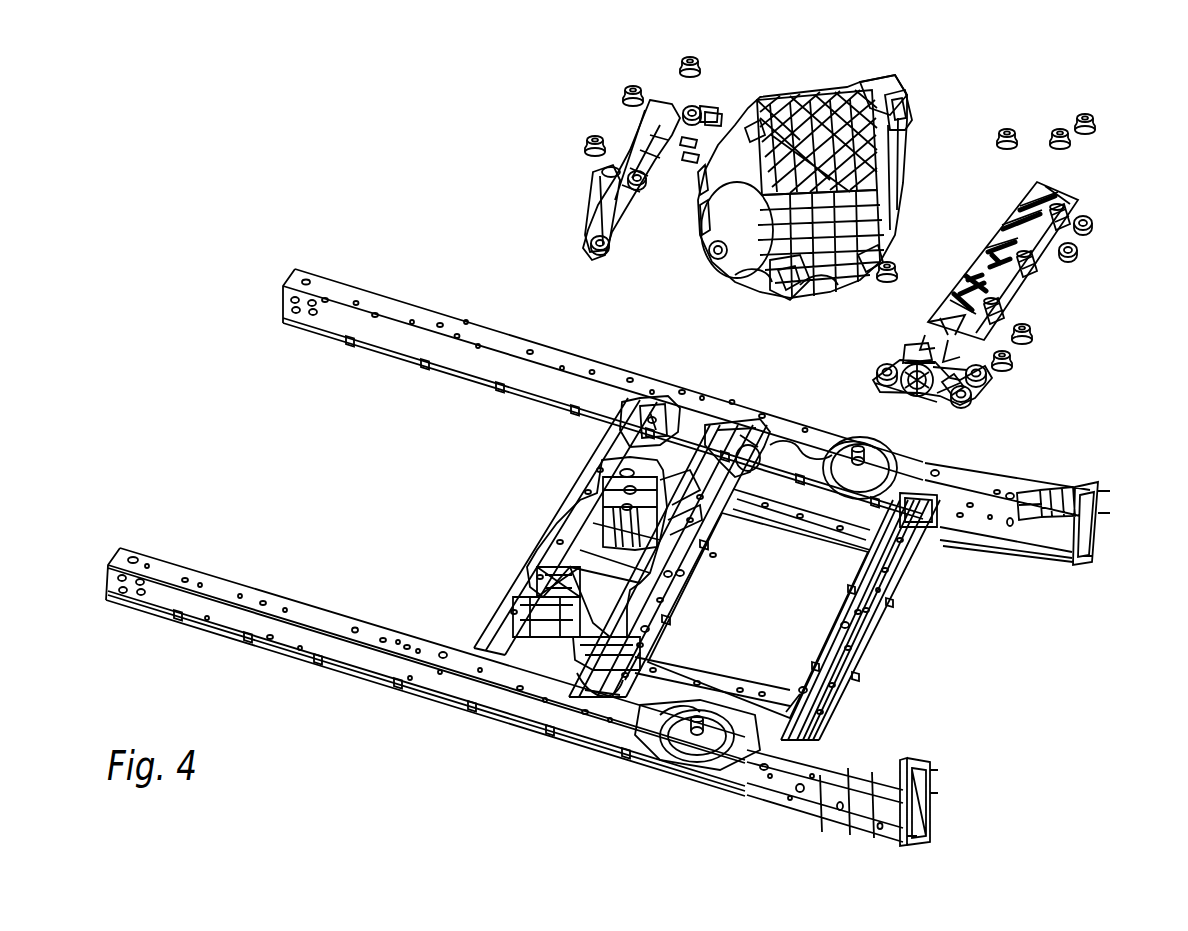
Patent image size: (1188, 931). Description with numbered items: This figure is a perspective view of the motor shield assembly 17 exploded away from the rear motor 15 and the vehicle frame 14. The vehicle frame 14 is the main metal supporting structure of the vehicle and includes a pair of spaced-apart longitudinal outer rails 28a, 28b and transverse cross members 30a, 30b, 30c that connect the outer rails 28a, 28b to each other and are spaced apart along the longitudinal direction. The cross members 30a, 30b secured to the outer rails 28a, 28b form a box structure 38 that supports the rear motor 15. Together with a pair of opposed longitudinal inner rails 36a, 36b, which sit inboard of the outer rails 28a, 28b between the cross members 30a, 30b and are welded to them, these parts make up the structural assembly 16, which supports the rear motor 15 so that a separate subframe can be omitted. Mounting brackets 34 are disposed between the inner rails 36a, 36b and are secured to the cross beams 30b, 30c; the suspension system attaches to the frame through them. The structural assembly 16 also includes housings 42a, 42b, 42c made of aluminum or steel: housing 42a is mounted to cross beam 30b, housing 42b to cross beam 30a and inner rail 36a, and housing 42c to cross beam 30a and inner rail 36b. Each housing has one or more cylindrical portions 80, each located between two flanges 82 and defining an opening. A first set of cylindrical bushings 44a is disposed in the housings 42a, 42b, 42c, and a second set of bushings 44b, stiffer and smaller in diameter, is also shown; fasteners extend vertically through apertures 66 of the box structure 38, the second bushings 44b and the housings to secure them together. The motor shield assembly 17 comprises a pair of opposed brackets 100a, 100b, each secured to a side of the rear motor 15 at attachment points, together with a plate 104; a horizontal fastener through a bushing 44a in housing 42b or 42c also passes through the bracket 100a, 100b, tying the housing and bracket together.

The vehicle frame 14 is at (362, 705).
The rear motor 15 is at (838, 112).
The structural assembly 16 is at (1076, 684).
The motor shield assembly 17 is at (1100, 276).
The longitudinal outer rail 28a is at (401, 298).
The longitudinal outer rail 28b is at (322, 597).
The cross member 30a is at (910, 548).
The cross member 30b is at (695, 562).
The cross member 30c is at (595, 432).
The mounting bracket 34 is at (565, 560).
The longitudinal inner rail 36a is at (785, 520).
The longitudinal inner rail 36b is at (745, 698).
The box structure 38 is at (933, 604).
The housing 42a is at (624, 242).
The housing 42b is at (1065, 188).
The housing 42c is at (978, 390).
The first set of bushings 44a is at (645, 140).
The second set of bushings 44b is at (585, 145).
The aperture 66 is at (650, 628).
The cylindrical portion 80 is at (665, 108).
The flange 82 is at (645, 142).
The bracket 100a is at (908, 113).
The bracket 100b is at (782, 255).
The plate 104 is at (1030, 290).